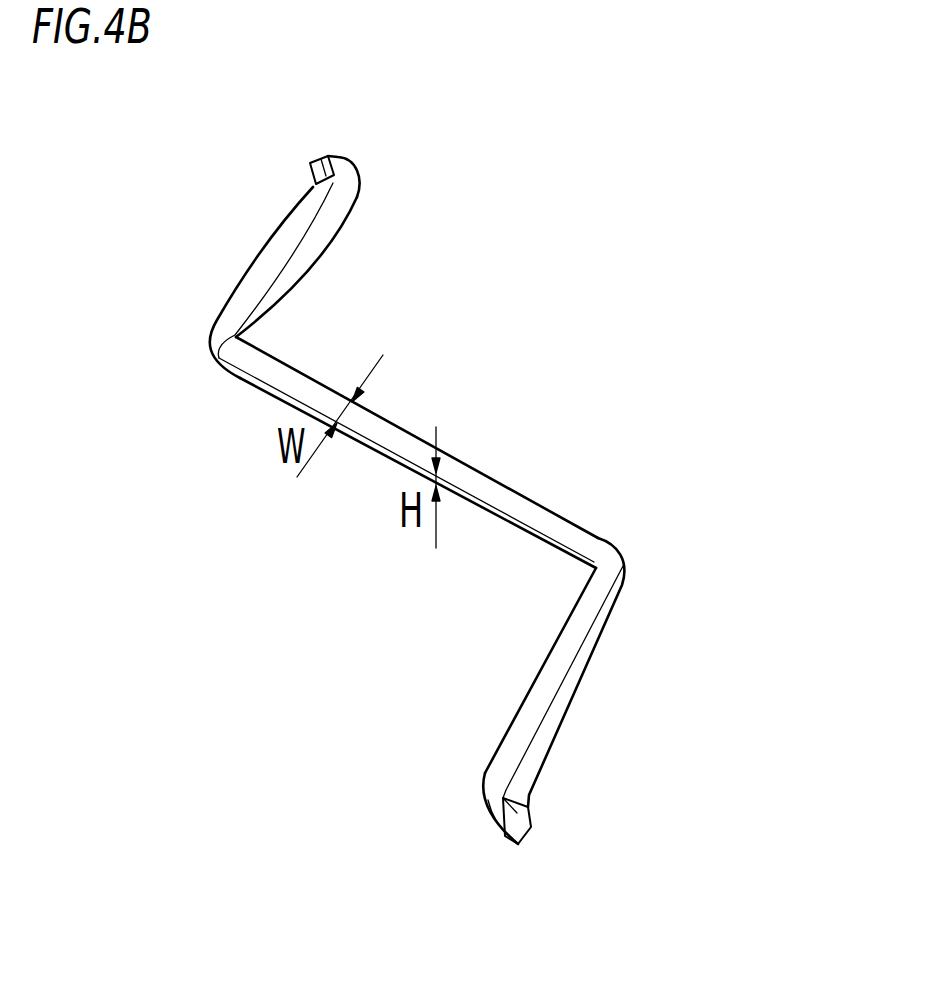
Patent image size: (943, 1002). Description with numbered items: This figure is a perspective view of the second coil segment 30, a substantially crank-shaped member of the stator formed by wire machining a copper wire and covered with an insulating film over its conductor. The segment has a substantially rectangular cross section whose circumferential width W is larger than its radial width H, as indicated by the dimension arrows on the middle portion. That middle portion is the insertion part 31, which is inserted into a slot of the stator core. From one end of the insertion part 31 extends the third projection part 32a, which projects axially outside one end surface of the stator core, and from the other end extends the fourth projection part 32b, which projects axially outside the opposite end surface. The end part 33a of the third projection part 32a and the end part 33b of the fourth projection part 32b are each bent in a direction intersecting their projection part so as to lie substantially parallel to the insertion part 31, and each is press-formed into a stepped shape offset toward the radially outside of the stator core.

The second coil segment 30 is at (492, 453).
The insertion part 31 is at (437, 452).
The third projection part 32a is at (629, 672).
The fourth projection part 32b is at (377, 280).
The end part of the third projection part 33a is at (613, 802).
The end part of the fourth projection part 33b is at (405, 130).